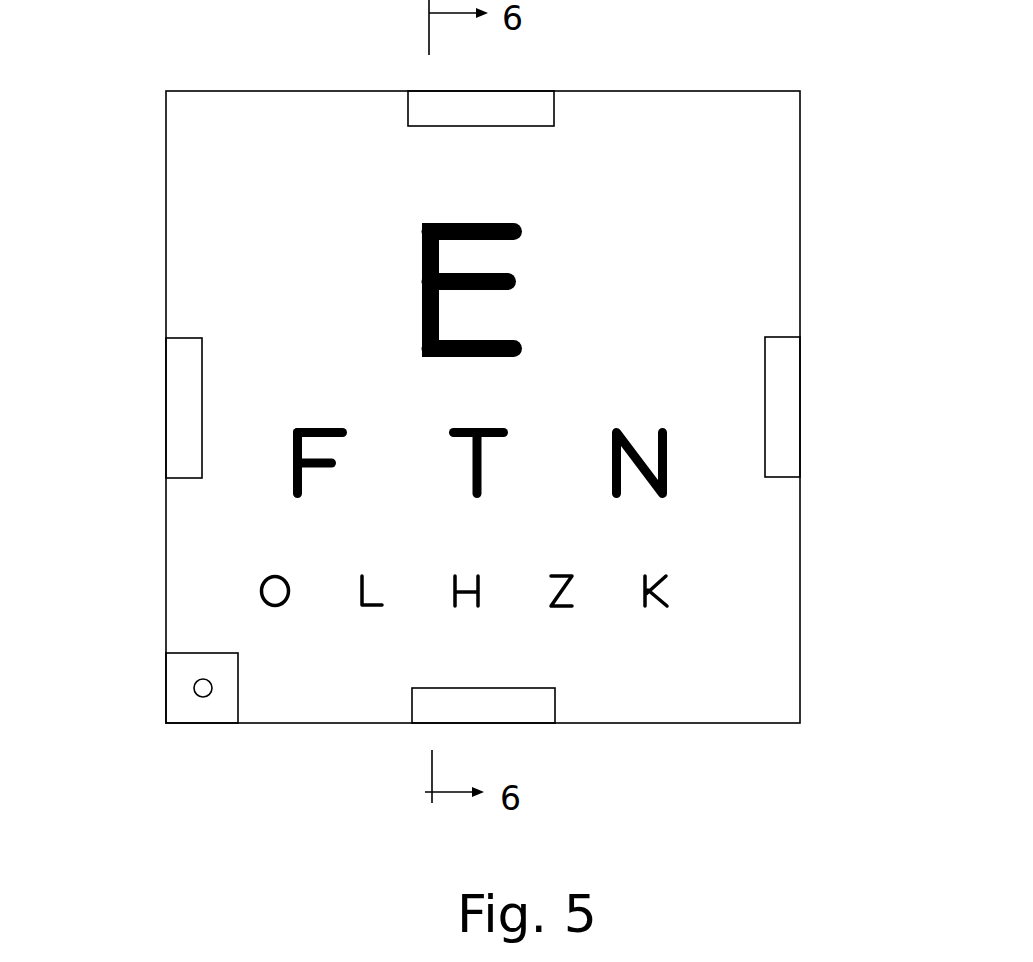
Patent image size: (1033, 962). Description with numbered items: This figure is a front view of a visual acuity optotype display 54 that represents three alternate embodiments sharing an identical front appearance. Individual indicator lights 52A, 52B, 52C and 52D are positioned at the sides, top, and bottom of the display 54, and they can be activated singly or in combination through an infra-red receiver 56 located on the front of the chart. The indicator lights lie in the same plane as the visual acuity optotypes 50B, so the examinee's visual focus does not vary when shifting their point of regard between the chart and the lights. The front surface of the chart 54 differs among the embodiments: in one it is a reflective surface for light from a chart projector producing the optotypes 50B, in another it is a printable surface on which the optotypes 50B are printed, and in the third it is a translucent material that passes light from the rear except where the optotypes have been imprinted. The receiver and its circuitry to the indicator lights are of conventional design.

The optotypes 50B is at (358, 594).
The indicator light 52A is at (166, 417).
The indicator light 52B is at (801, 386).
The indicator light 52C is at (408, 117).
The indicator light 52D is at (412, 703).
The visual acuity optotype display 54 is at (700, 222).
The infra-red receiver 56 is at (196, 723).